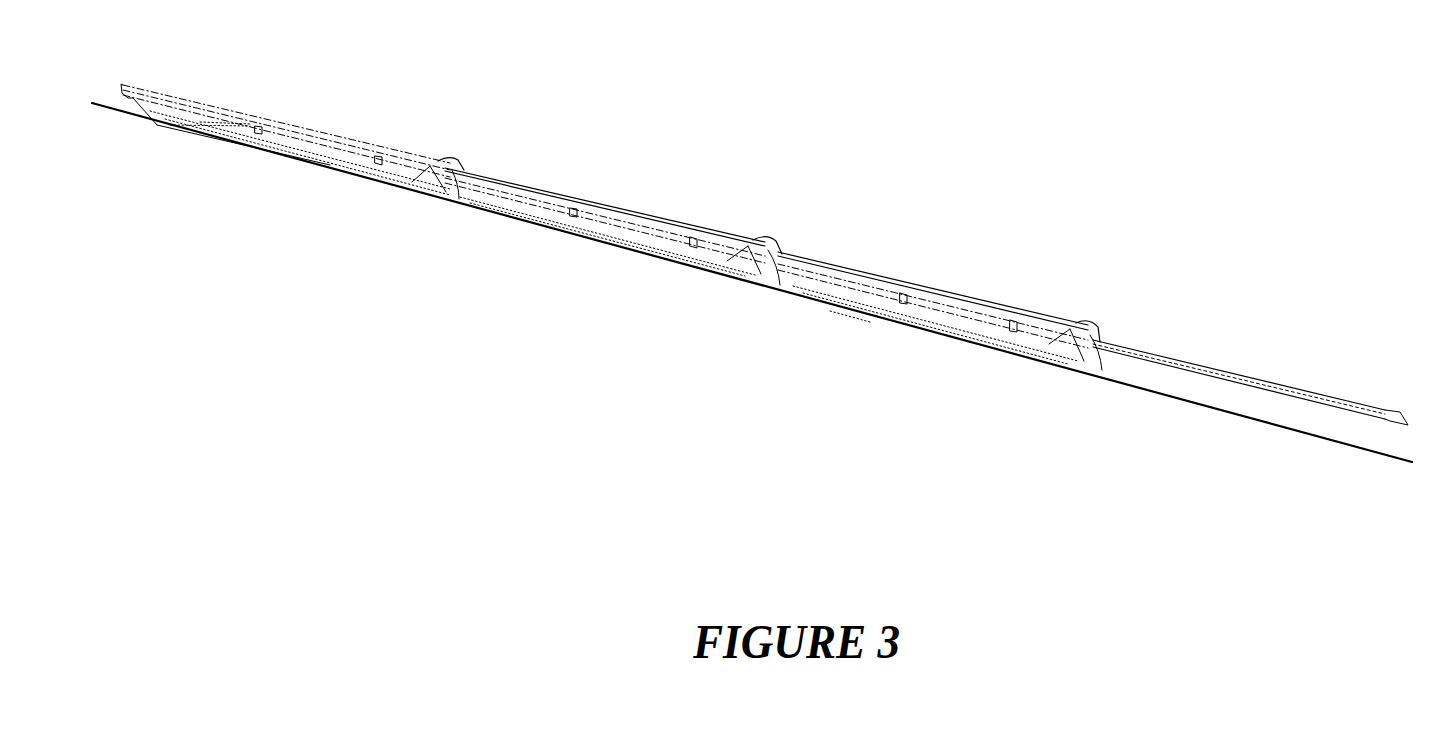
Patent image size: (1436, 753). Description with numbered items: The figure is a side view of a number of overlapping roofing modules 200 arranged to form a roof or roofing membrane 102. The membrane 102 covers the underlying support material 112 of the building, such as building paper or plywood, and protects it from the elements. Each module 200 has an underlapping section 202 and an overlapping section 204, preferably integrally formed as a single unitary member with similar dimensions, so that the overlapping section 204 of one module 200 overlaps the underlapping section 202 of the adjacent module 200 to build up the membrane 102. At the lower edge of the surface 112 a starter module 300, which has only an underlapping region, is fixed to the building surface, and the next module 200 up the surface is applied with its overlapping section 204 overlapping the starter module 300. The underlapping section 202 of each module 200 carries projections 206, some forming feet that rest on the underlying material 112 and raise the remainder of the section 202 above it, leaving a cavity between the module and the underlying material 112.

The roofing membrane 102 is at (916, 124).
The underlying support material 112 is at (1240, 417).
The roofing module 200 is at (764, 242).
The underlapping section 202 is at (307, 129).
The overlapping section 204 is at (537, 191).
The projections 206 is at (288, 147).
The starter module 300 is at (846, 326).